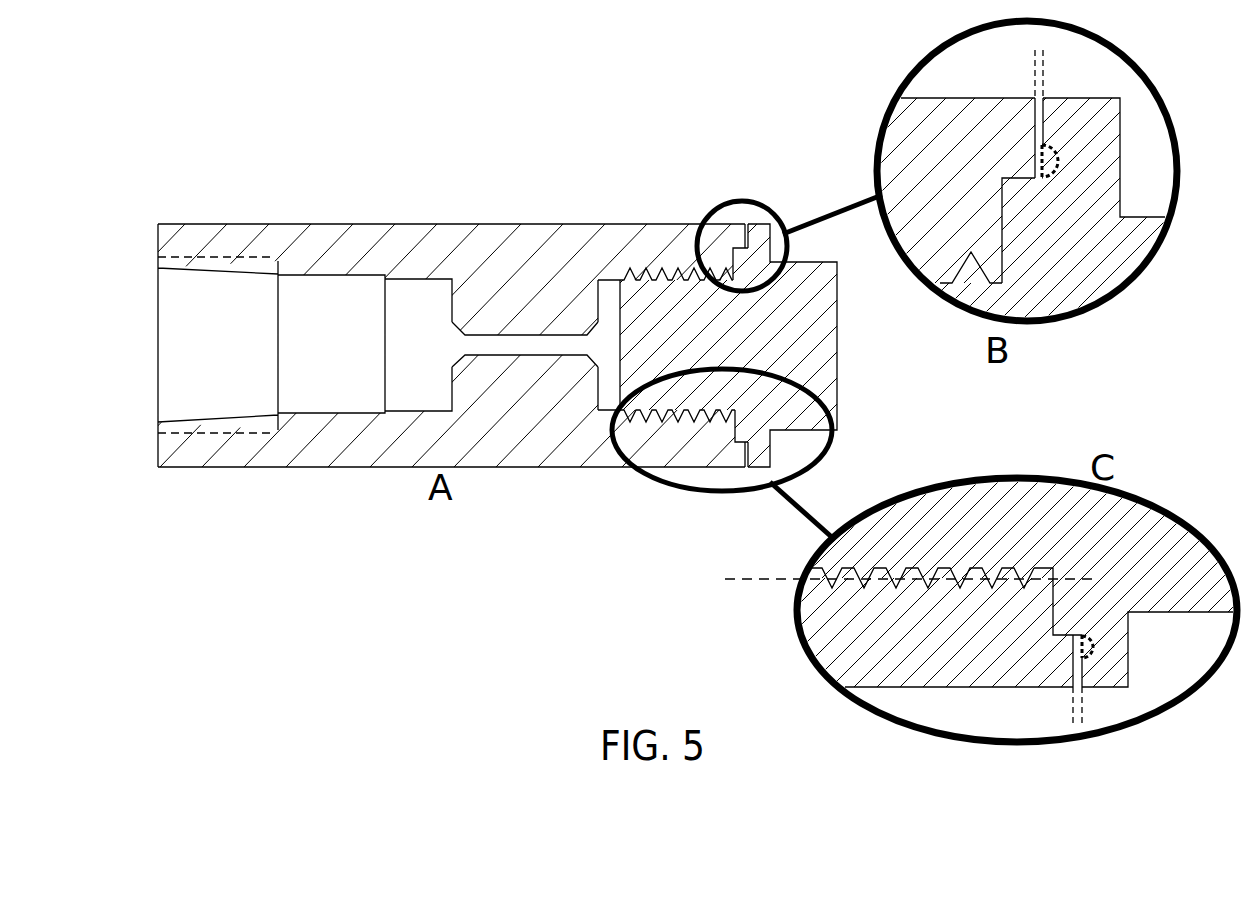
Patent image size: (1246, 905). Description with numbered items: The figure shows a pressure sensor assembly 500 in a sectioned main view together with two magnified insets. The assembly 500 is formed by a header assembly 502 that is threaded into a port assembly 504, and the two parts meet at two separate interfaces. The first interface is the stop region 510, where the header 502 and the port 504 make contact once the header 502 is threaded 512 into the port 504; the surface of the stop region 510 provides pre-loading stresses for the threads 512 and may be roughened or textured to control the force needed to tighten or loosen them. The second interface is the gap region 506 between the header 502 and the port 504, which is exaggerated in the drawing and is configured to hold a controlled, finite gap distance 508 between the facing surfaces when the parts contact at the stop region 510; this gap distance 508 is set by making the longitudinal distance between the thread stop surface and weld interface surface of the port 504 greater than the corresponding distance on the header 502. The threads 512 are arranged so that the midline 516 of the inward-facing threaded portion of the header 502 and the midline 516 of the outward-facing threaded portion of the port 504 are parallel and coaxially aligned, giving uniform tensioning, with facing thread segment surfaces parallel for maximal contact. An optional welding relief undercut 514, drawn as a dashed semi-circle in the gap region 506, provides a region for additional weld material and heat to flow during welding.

The pressure sensor assembly 500 is at (528, 80).
The header assembly 502 is at (550, 440).
The port assembly 504 is at (705, 345).
The gap region 506 is at (1035, 125).
The gap distance 508 is at (990, 68).
The stop region 510 is at (732, 246).
The threads 512 is at (658, 266).
The welding relief undercut 514 is at (1068, 168).
The midline 516 is at (763, 578).